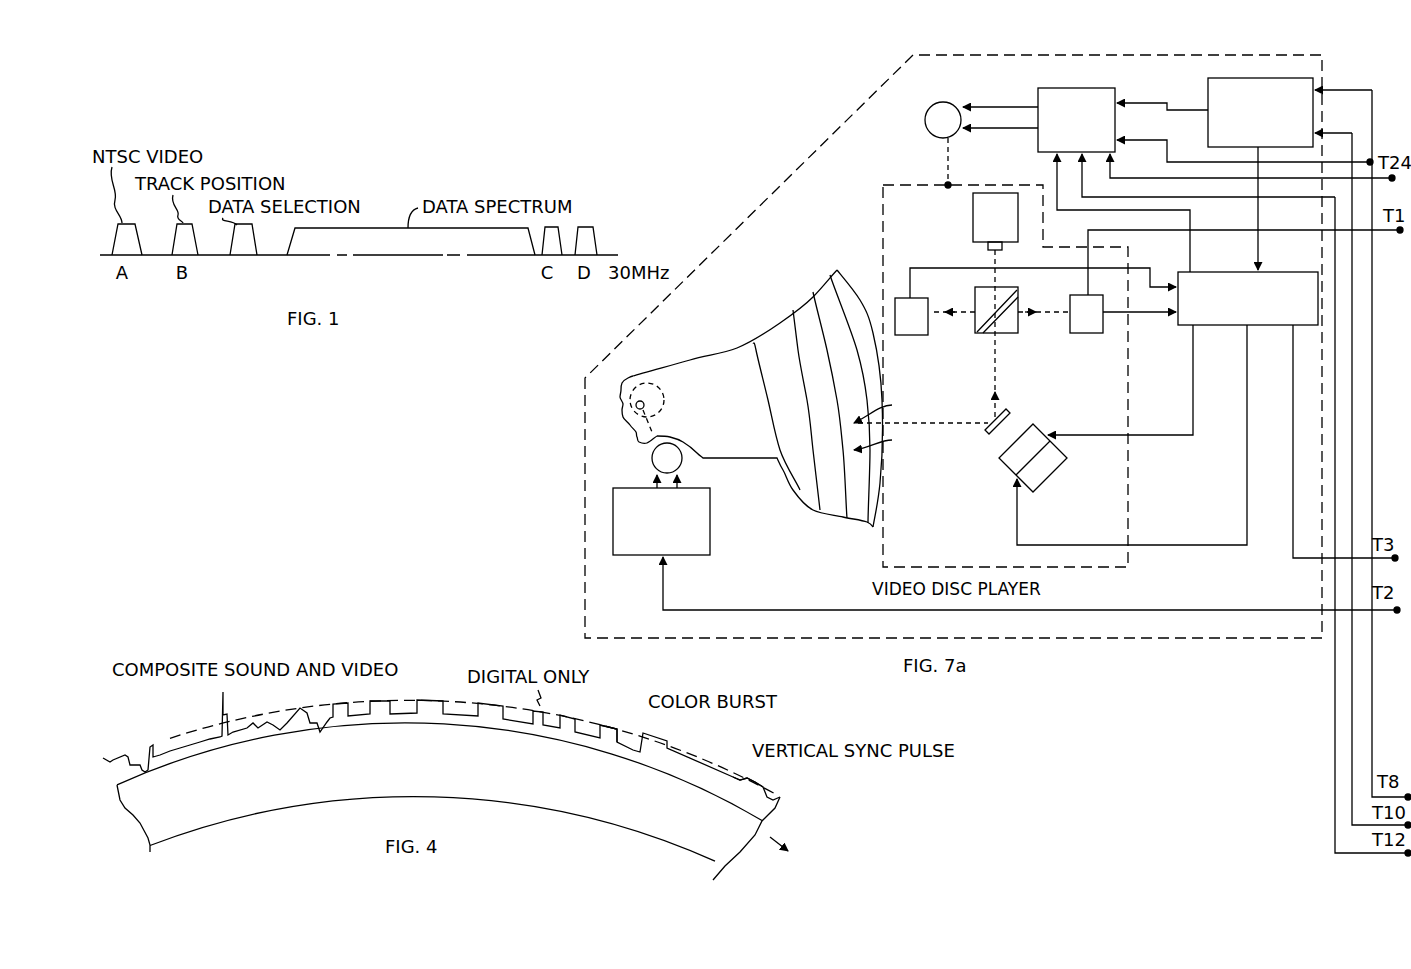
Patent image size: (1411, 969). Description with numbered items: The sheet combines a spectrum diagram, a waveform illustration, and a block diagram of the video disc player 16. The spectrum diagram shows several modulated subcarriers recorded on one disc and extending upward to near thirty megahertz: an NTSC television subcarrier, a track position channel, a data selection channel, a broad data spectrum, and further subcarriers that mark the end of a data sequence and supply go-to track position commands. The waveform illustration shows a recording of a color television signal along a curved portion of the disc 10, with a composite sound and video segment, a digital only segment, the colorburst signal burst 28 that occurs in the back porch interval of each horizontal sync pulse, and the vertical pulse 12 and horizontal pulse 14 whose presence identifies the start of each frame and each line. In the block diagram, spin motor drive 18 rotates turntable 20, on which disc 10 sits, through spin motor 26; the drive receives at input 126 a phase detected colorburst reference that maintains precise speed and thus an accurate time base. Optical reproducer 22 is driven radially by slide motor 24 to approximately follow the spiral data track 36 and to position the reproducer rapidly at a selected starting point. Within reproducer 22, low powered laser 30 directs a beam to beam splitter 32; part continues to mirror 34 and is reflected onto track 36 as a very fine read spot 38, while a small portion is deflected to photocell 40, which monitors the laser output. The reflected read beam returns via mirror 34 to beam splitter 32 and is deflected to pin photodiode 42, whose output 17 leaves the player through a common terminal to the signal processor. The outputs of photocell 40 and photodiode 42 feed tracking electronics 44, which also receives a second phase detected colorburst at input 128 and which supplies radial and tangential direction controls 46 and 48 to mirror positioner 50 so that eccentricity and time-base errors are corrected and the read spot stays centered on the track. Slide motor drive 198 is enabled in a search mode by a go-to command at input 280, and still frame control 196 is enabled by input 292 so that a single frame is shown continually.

In FIG. 4, the disc 10 is at (763, 825).
In FIG. 7A, the disc 10 is at (735, 348).
In FIG. 4, the vertical pulse 12 is at (747, 778).
In FIG. 4, the horizontal pulse 14 is at (148, 746).
In FIG. 7A, the video disc player 16 is at (957, 89).
In FIG. 7A, the output 17 is at (1203, 220).
In FIG. 7A, the spin motor drive 18 is at (712, 527).
In FIG. 7A, the turntable 20 is at (633, 376).
In FIG. 7A, the optical reproducer 22 is at (905, 182).
In FIG. 7A, the slide motor 24 is at (925, 122).
In FIG. 7A, the spin motor 26 is at (652, 457).
In FIG. 4, the signal burst 28 is at (623, 750).
In FIG. 7A, the laser 30 is at (973, 218).
In FIG. 7A, the beam splitter 32 is at (973, 300).
In FIG. 7A, the mirror 34 is at (1010, 415).
In FIG. 7A, the data track 36 is at (886, 440).
In FIG. 7A, the read spot 38 is at (885, 405).
In FIG. 7A, the photocell 40 is at (915, 335).
In FIG. 7A, the pin photodiode 42 is at (1070, 295).
In FIG. 7A, the tracking electronics 44 is at (1217, 270).
In FIG. 7A, the radial direction control 46 is at (1072, 438).
In FIG. 7A, the tangential direction control 48 is at (1050, 536).
In FIG. 7A, the mirror positioner 50 is at (1064, 468).
In FIG. 7A, the input 126 is at (667, 560).
In FIG. 7A, the input 128 is at (1287, 325).
In FIG. 7A, the still frame control 196 is at (1264, 78).
In FIG. 7A, the slide motor drive 198 is at (1064, 88).
In FIG. 7A, the input 280 is at (1117, 140).
In FIG. 7A, the input 292 is at (1315, 133).